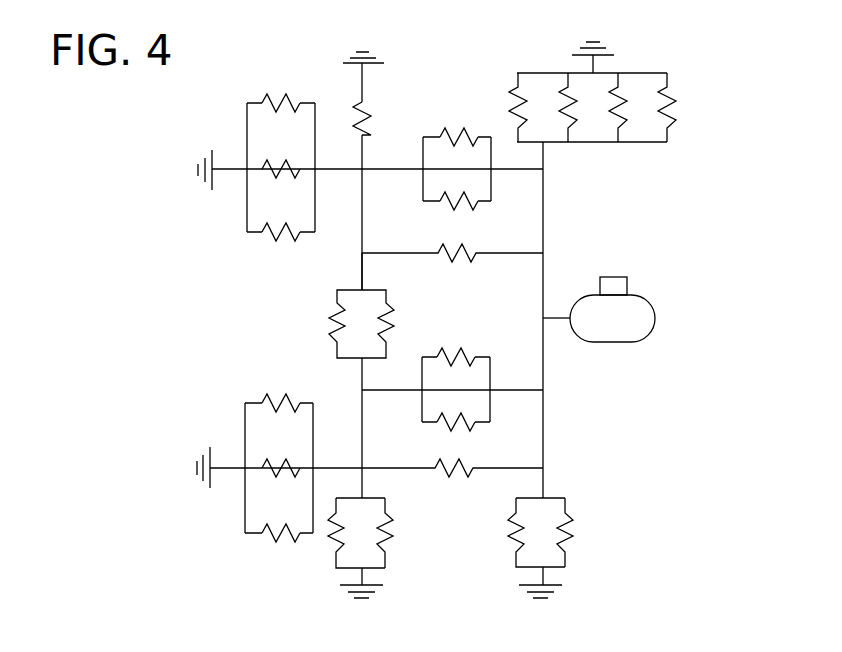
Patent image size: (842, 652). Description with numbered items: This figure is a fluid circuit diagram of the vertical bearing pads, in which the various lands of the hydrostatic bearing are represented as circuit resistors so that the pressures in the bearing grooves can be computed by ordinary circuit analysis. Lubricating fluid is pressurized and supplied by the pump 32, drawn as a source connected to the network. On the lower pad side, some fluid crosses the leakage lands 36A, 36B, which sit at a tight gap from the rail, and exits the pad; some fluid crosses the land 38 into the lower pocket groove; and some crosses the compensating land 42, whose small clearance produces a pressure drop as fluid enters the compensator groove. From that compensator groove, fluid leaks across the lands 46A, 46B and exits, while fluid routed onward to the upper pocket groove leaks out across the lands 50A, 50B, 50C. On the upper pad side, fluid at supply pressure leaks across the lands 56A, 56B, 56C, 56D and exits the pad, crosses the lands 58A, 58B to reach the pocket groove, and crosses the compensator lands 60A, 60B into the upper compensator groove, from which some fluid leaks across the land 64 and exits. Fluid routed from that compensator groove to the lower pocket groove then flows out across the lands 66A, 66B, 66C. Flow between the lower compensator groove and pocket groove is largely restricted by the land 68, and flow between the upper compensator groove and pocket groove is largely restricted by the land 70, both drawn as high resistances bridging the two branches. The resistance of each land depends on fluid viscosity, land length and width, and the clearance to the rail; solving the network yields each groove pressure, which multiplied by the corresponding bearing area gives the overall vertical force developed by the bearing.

The pump 32 is at (613, 323).
The leakage land 36A is at (577, 532).
The leakage land 36B is at (505, 533).
The land 38 is at (458, 275).
The compensating land 42 is at (453, 483).
The land 46A is at (397, 529).
The land 46B is at (325, 533).
The land 50A is at (267, 393).
The land 50B is at (280, 453).
The land 50C is at (285, 542).
The land 56A is at (508, 102).
The land 56B is at (548, 103).
The land 56C is at (630, 102).
The land 56D is at (675, 92).
The land 58A is at (455, 347).
The land 58B is at (462, 435).
The compensator land 60A is at (458, 123).
The compensator land 60B is at (460, 213).
The land 64 is at (377, 115).
The land 66A is at (290, 92).
The land 66B is at (278, 181).
The land 66C is at (283, 242).
The land 68 is at (405, 320).
The land 70 is at (328, 318).